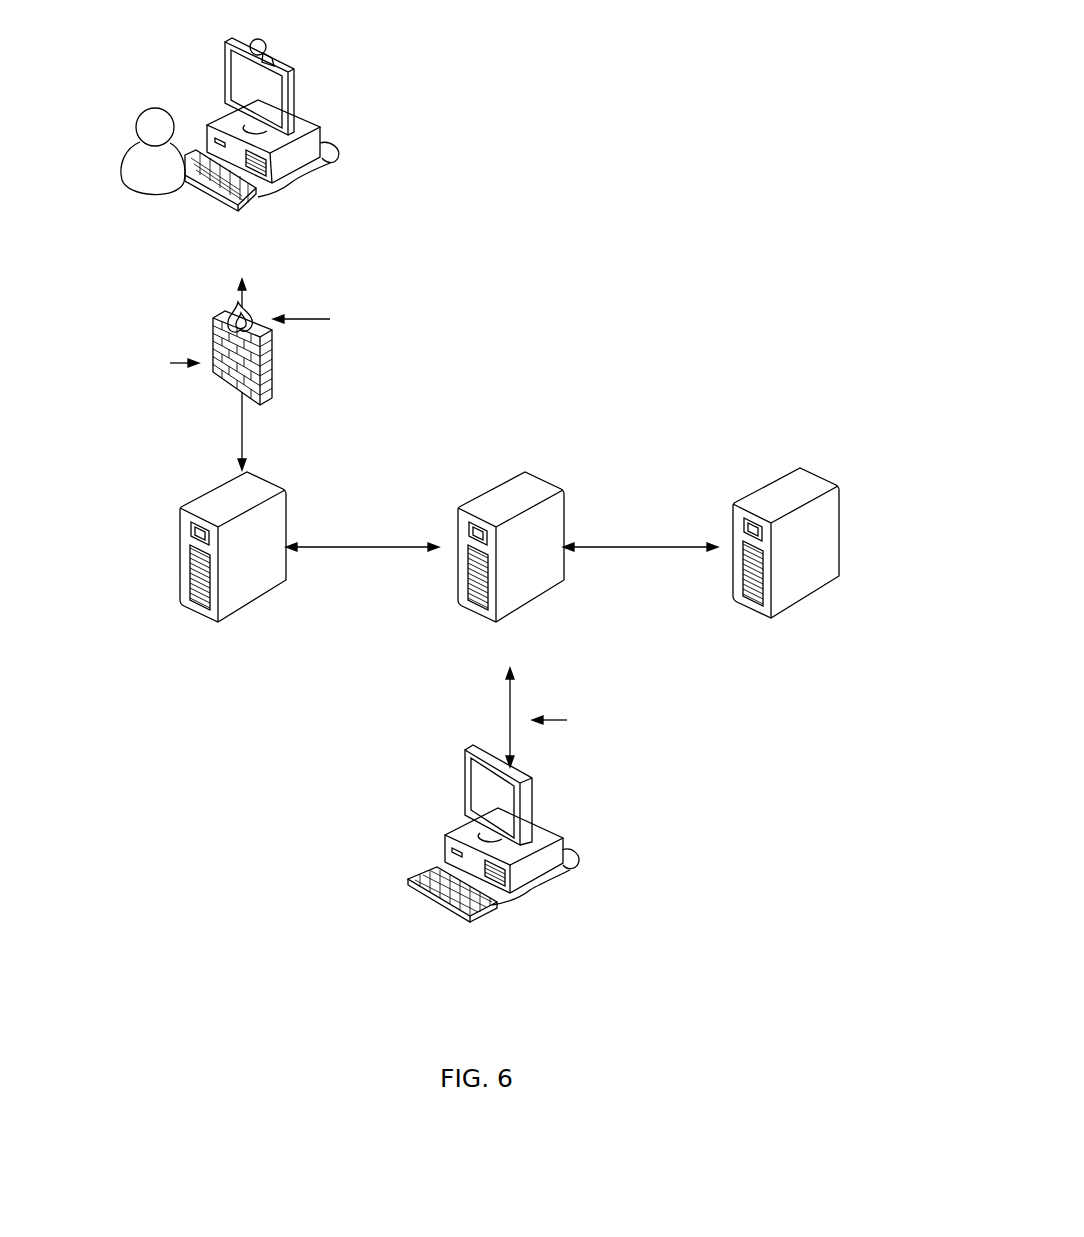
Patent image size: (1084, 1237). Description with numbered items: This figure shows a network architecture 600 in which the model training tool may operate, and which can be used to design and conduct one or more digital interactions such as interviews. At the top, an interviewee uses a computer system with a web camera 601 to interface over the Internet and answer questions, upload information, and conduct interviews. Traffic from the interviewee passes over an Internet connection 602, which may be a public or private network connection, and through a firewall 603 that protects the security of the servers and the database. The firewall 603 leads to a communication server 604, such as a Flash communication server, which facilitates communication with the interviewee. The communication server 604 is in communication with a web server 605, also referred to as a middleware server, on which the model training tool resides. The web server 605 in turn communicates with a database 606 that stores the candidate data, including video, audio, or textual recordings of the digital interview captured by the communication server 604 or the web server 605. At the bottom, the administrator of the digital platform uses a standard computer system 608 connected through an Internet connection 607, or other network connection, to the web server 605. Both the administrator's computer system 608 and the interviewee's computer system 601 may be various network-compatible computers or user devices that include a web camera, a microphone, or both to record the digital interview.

The network architecture 600 is at (682, 62).
The computer system with a web camera 601 is at (319, 127).
The Internet connection 602 is at (455, 285).
The firewall 603 is at (226, 380).
The communication server 604 is at (279, 491).
The web server 605 is at (557, 491).
The database 606 is at (827, 491).
The Internet connection 607 is at (510, 718).
The computer system 608 is at (563, 836).